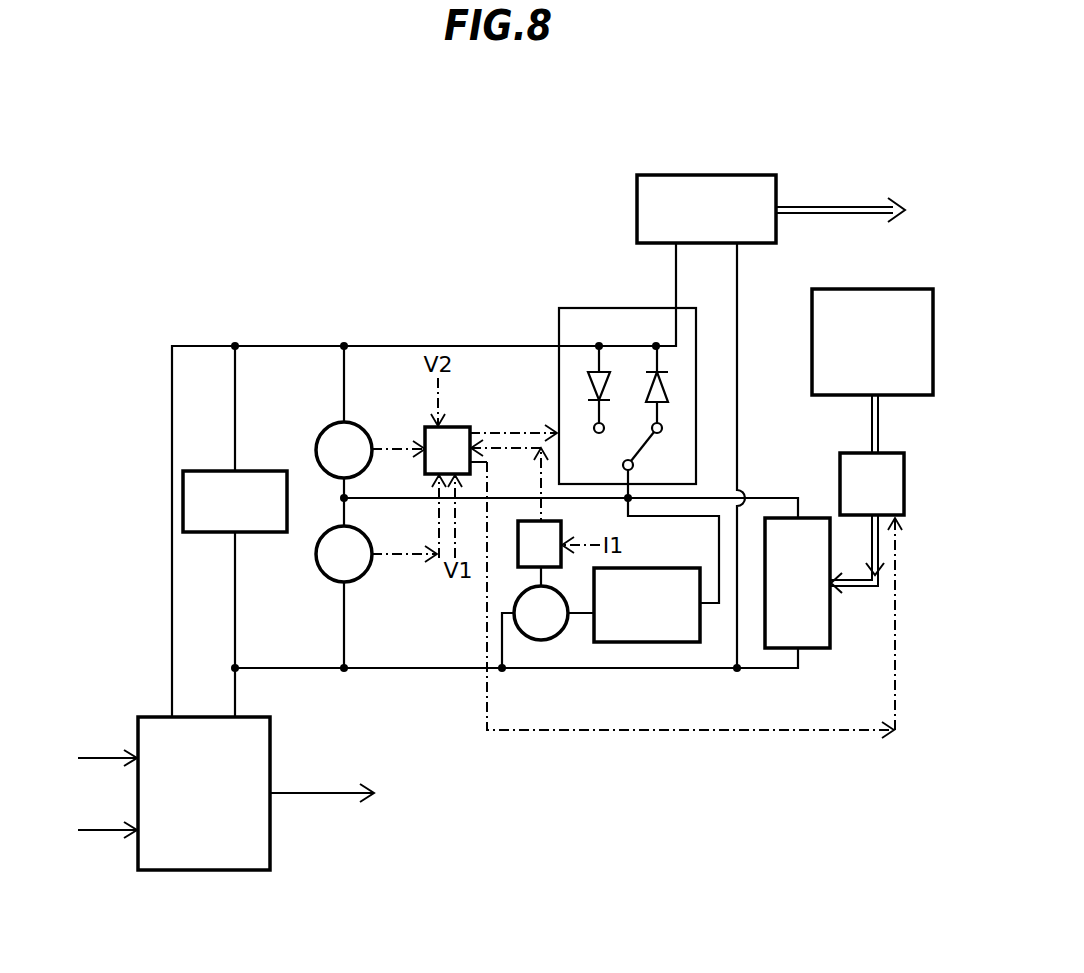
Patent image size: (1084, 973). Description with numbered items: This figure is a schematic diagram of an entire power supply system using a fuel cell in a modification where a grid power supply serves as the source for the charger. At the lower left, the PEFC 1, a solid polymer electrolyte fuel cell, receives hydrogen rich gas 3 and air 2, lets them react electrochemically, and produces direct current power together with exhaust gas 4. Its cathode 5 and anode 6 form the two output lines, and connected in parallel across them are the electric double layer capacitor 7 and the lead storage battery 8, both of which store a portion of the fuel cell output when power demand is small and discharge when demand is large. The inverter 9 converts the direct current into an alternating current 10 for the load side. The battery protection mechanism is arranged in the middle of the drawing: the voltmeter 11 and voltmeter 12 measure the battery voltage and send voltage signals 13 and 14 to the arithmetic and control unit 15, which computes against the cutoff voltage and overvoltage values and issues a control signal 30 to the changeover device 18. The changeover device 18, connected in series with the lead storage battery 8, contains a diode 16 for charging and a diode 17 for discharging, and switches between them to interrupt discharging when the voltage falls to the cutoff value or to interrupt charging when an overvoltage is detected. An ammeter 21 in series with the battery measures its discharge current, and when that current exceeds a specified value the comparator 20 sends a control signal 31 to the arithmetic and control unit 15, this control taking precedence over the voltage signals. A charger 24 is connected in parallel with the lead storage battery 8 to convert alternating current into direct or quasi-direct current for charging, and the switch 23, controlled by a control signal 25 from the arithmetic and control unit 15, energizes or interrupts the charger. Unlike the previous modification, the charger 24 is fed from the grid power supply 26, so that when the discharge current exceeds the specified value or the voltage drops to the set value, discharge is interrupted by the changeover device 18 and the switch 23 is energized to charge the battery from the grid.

The PEFC 1 is at (271, 846).
The air 2 is at (109, 829).
The hydrogen rich gas 3 is at (109, 757).
The exhaust gas 4 is at (305, 793).
The cathode 5 is at (172, 477).
The anode 6 is at (425, 668).
The electric double layer capacitor 7 is at (250, 471).
The lead storage battery 8 is at (700, 615).
The inverter 9 is at (688, 175).
The alternating current 10 is at (826, 205).
The voltmeter 11 is at (330, 579).
The voltmeter 12 is at (330, 426).
The voltage signal 13 is at (374, 447).
The voltage signal 14 is at (404, 558).
The arithmetic and control unit 15 is at (458, 427).
The diode 16 is at (593, 385).
The diode 17 is at (658, 404).
The changeover device 18 is at (618, 379).
The comparator 20 is at (556, 521).
The ammeter 21 is at (565, 627).
The switch 23 is at (852, 453).
The charger 24 is at (817, 648).
The control signal 25 is at (703, 730).
The grid power supply 26 is at (848, 289).
The control signal 30 is at (513, 432).
The control signal 31 is at (509, 480).